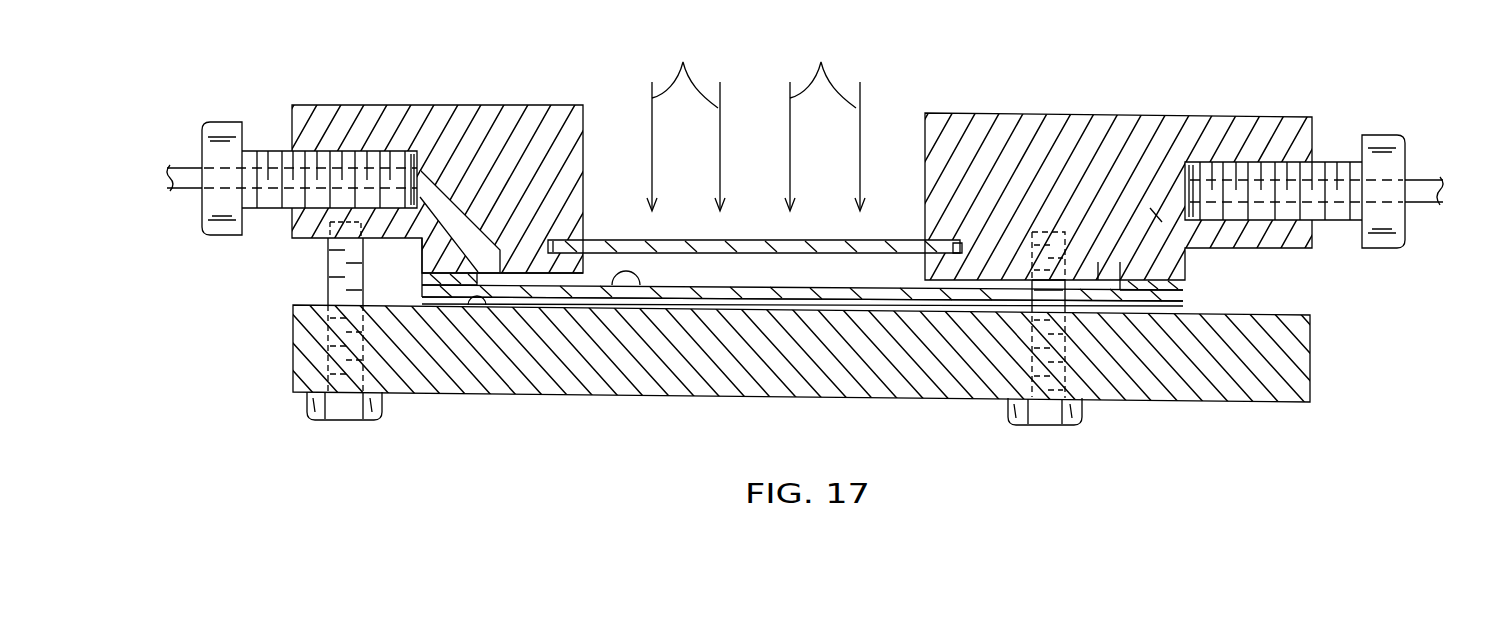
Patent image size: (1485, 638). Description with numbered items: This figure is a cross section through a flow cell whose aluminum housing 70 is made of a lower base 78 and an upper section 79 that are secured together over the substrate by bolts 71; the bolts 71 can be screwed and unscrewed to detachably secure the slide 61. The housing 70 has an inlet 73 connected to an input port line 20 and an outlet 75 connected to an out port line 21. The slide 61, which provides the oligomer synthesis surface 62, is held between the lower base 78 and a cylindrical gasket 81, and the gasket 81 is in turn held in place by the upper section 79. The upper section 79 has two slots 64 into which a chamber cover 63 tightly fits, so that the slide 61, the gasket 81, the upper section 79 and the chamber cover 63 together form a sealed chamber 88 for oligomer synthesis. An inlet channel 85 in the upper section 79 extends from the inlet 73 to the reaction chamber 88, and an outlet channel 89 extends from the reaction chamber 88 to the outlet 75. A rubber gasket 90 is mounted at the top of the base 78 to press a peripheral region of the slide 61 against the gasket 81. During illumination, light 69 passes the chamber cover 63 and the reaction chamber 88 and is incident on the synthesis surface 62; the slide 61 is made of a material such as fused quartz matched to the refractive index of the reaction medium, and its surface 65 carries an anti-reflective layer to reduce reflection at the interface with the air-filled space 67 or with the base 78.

The input port line 20 is at (1422, 180).
The out port line 21 is at (182, 190).
The slide 61 is at (885, 298).
The oligomer synthesis surface 62 is at (612, 286).
The chamber cover 63 is at (890, 240).
The slots 64 is at (962, 252).
The surface of the slide 65 is at (930, 300).
The space 67 is at (781, 300).
The illumination light 69 is at (756, 121).
The aluminum housing 70 is at (540, 105).
The bolts 71 is at (1045, 425).
The inlet 73 is at (1330, 162).
The outlet 75 is at (262, 151).
The lower base 78 is at (460, 393).
The upper section 79 is at (1117, 113).
The cylindrical gasket 81 is at (422, 278).
The inlet channel 85 is at (1155, 213).
The sealed chamber 88 is at (712, 268).
The outlet channel 89 is at (440, 200).
The rubber gasket 90 is at (478, 305).